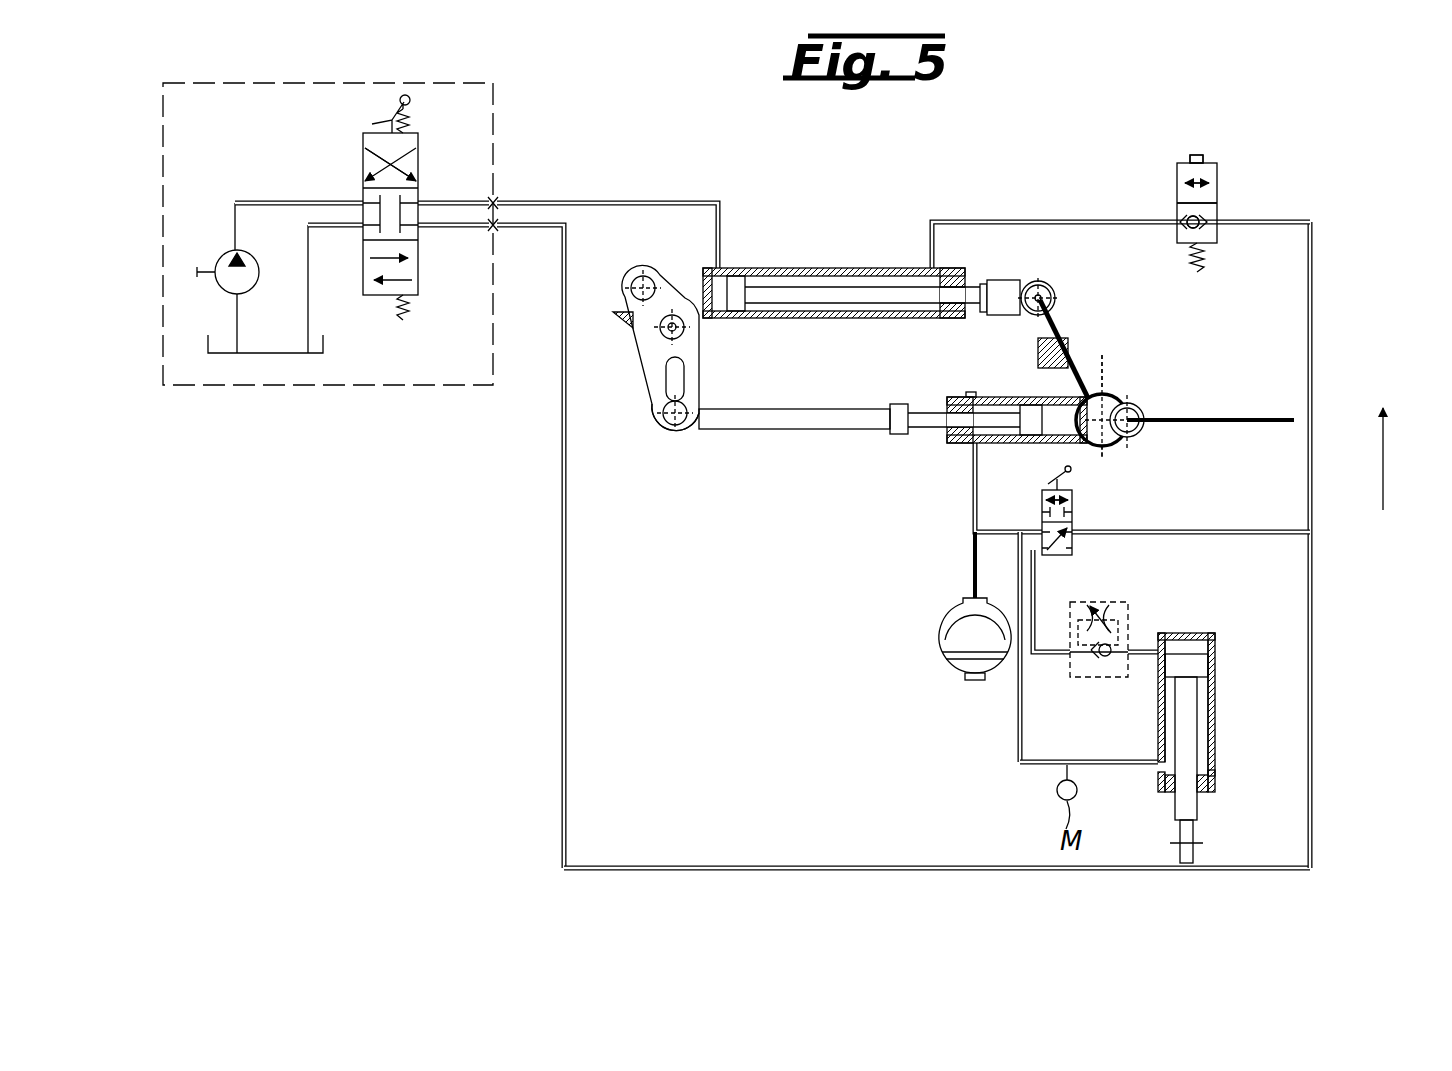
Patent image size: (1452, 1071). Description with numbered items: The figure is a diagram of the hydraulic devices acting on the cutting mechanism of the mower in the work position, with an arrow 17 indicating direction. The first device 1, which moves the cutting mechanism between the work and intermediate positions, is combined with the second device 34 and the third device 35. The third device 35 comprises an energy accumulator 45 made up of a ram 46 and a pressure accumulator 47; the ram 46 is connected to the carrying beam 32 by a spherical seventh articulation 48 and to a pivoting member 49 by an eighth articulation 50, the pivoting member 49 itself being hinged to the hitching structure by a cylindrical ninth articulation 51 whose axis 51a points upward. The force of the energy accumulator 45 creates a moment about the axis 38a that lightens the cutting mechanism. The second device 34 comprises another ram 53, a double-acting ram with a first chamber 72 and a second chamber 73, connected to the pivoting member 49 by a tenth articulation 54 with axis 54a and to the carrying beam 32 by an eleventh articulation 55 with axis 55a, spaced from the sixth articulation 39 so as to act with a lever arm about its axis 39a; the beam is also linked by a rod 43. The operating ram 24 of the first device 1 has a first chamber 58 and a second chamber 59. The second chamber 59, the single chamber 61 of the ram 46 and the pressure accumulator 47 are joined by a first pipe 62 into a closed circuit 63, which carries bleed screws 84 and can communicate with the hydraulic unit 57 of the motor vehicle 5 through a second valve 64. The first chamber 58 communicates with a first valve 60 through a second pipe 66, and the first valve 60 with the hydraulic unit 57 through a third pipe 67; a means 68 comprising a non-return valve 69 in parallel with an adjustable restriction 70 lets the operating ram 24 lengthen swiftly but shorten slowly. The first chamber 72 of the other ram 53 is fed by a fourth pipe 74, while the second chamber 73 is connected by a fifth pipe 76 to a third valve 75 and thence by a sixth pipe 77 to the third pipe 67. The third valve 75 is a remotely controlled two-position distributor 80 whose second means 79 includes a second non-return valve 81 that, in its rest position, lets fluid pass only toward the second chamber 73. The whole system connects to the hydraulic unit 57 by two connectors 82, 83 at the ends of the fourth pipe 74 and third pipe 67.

The first device 1 is at (1215, 725).
The motor vehicle 5 is at (414, 393).
The direction of travel 17 is at (1383, 462).
The operating ram 24 is at (1215, 681).
The carrying beam 32 is at (1205, 418).
The second device 34 is at (845, 281).
The third device 35 is at (945, 667).
The axis 38a is at (1104, 362).
The sixth articulation 39 is at (1110, 396).
The axis 39a is at (1112, 446).
The connecting rod 43 is at (780, 433).
The energy accumulator 45 is at (994, 427).
The ram 46 is at (1005, 397).
The pressure accumulator 47 is at (975, 684).
The seventh articulation 48 is at (1141, 411).
The pivoting member 49 is at (656, 396).
The eighth articulation 50 is at (663, 441).
The ninth articulation 51 is at (661, 337).
The longitudinal axis 51a is at (670, 334).
The other ram 53 is at (893, 268).
The tenth articulation 54 is at (631, 297).
The longitudinal axis 54a is at (645, 280).
The eleventh articulation 55 is at (1052, 298).
The longitudinal axis 55a is at (1040, 294).
The hydraulic unit 57 is at (498, 119).
The first chamber 58 is at (1186, 646).
The second chamber 59 is at (1206, 739).
The first valve 60 is at (1092, 516).
The single chamber 61 is at (1005, 444).
The first pipe 62 is at (1040, 765).
The closed circuit 63 is at (1017, 764).
The second valve 64 is at (1074, 512).
The second pipe 66 is at (1045, 653).
The third pipe 67 is at (898, 871).
The means 68 is at (1129, 638).
The non-return valve 69 is at (1106, 660).
The adjustable restriction 70 is at (1100, 610).
The first chamber 72 is at (716, 305).
The second chamber 73 is at (842, 313).
The fourth pipe 74 is at (645, 201).
The third valve 75 is at (1218, 175).
The fifth pipe 76 is at (1042, 220).
The sixth pipe 77 is at (1312, 320).
The second means 79 is at (1221, 204).
The distributor 80 is at (1214, 158).
The second non-return valve 81 is at (1203, 226).
The connector 82 is at (496, 199).
The connector 83 is at (496, 231).
The bleed screws 84 is at (970, 395).